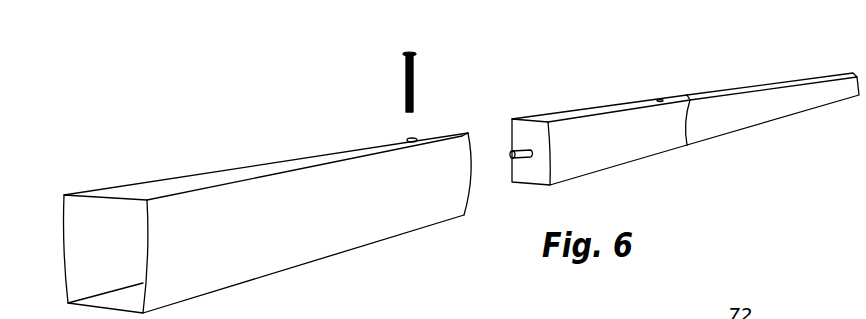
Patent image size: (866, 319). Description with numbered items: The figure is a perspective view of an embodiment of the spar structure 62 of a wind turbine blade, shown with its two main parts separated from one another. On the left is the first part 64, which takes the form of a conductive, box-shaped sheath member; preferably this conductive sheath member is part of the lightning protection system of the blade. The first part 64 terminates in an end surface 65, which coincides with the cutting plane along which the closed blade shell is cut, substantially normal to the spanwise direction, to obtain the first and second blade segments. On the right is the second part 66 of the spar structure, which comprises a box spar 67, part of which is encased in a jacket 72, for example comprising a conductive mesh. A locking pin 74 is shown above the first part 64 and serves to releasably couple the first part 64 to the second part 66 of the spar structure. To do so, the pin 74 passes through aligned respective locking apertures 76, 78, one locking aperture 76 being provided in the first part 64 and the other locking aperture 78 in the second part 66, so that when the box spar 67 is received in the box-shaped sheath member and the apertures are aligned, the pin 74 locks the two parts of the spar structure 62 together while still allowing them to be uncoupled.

The spar structure 62 is at (296, 183).
The first part 64 is at (195, 180).
The end surface 65 is at (473, 197).
The second part 66 is at (684, 126).
The box spar 67 is at (602, 120).
The jacket 72 is at (770, 102).
The locking pin 74 is at (405, 87).
The locking aperture 76 is at (411, 139).
The locking aperture 78 is at (660, 100).